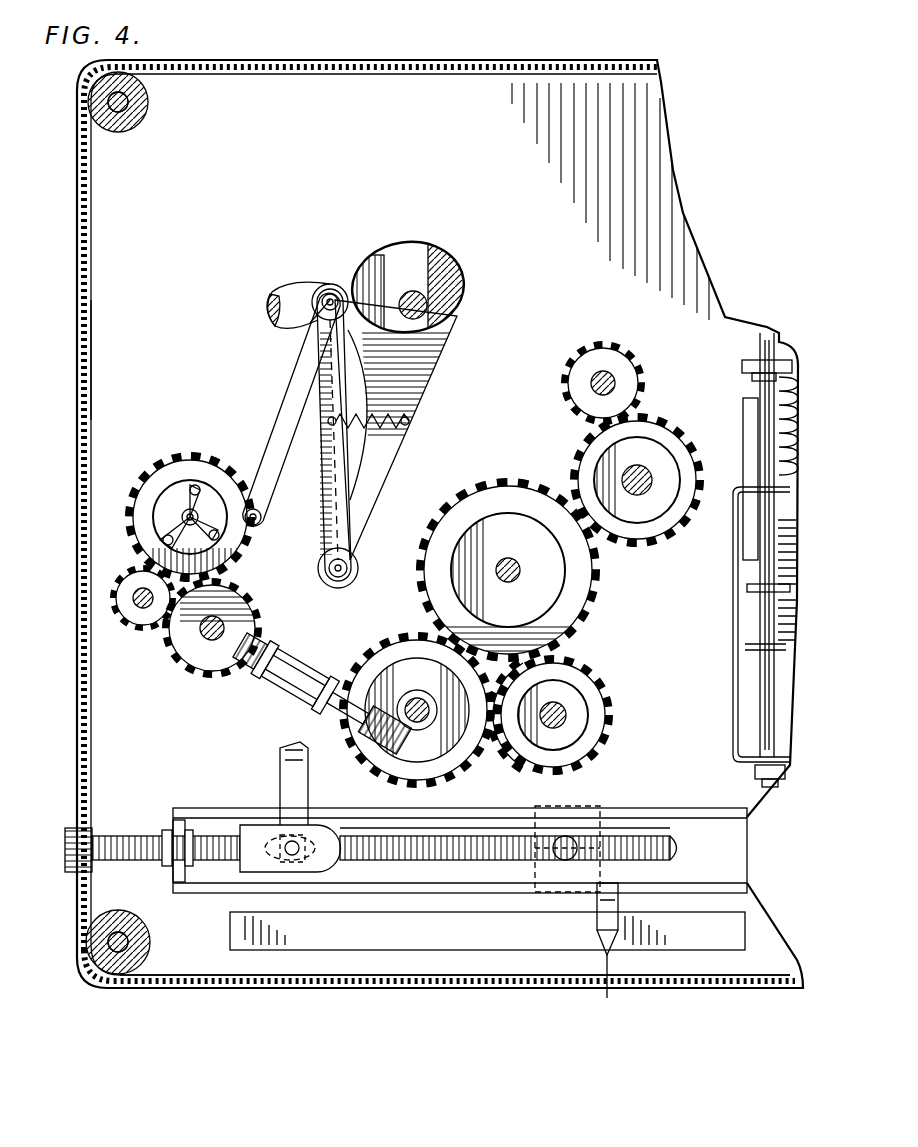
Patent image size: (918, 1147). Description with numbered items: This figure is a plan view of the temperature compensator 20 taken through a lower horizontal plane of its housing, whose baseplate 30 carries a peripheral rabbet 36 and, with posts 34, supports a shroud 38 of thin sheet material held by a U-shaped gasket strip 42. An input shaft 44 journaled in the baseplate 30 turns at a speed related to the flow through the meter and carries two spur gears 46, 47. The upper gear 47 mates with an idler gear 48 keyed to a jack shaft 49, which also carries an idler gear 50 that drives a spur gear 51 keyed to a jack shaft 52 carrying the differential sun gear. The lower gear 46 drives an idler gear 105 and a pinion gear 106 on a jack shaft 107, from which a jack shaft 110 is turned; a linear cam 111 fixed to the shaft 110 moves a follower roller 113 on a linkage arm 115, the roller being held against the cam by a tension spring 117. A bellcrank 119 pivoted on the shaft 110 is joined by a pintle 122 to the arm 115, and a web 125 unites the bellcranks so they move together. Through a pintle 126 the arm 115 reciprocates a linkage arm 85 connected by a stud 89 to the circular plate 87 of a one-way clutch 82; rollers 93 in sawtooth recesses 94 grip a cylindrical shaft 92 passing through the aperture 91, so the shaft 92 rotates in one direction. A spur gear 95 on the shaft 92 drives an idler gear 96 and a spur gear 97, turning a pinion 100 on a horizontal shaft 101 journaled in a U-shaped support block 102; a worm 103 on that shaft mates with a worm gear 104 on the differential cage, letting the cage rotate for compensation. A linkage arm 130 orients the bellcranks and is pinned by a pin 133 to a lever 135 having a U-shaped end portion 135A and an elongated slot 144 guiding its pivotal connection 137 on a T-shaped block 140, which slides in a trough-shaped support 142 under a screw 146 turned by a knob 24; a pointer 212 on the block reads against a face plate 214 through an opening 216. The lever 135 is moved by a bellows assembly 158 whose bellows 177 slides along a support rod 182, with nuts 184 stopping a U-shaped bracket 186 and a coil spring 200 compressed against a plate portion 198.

The temperature compensator 20 is at (262, 50).
The knob 24 is at (65, 860).
The baseplate 30 is at (100, 262).
The posts 34 is at (122, 130).
The annular peripheral rabbet 36 is at (92, 330).
The shroud 38 is at (80, 325).
The U-shaped gasket strip 42 is at (78, 300).
The input shaft 44 is at (522, 572).
The spur gear 46 is at (595, 555).
The spur gear 47 is at (458, 522).
The idler gear 48 is at (612, 715).
The jack shaft 49 is at (565, 712).
The idler gear 50 is at (500, 752).
The spur gear 51 is at (370, 680).
The jack shaft 52 is at (385, 690).
The one-way clutch 82 is at (176, 470).
The linkage arm 85 is at (278, 440).
The circular plate 87 is at (235, 565).
The stud 89 is at (262, 522).
The central circular aperture 91 is at (180, 514).
The cylindrical shaft 92 is at (170, 540).
The rollers 93 is at (192, 492).
The sawtooth-shaped recesses 94 is at (210, 500).
The spur gear 95 is at (150, 490).
The idler gear 96 is at (135, 625).
The spur gear 97 is at (195, 660).
The pinion 100 is at (250, 665).
The horizontally disposed shaft 101 is at (300, 660).
The U-shaped support block 102 is at (340, 672).
The worm 103 is at (410, 748).
The worm gear 104 is at (437, 712).
The idler gear 105 is at (572, 478).
The pinion gear 106 is at (575, 408).
The jack shaft 107 is at (590, 383).
The jack shaft 110 is at (430, 312).
The linear cam 111 is at (382, 246).
The follower roller 113 is at (318, 290).
The linkage arm 115 is at (352, 525).
The tension spring 117 is at (409, 417).
The bellcrank 119 is at (415, 355).
The pintle 122 is at (358, 572).
The web 125 is at (265, 300).
The pintle 126 is at (310, 323).
The linkage arm 130 is at (292, 758).
The pin 133 is at (288, 842).
The lever 135 is at (355, 872).
The U-shaped end portion 135A is at (320, 872).
The pivotal connection 137 is at (578, 830).
The T-shaped block 140 is at (584, 898).
The trough-shaped support 142 is at (188, 885).
The elongated slot 144 is at (455, 862).
The screw 146 is at (130, 836).
The bellows assembly 158 is at (785, 794).
The bellows 177 is at (760, 615).
The support rod 182 is at (758, 412).
The nuts 184 is at (752, 770).
The U-shaped bracket 186 is at (728, 712).
The plate portion 198 is at (748, 362).
The coil spring 200 is at (778, 435).
The pointer 212 is at (607, 985).
The face plate 214 is at (395, 955).
The opening 216 is at (270, 984).